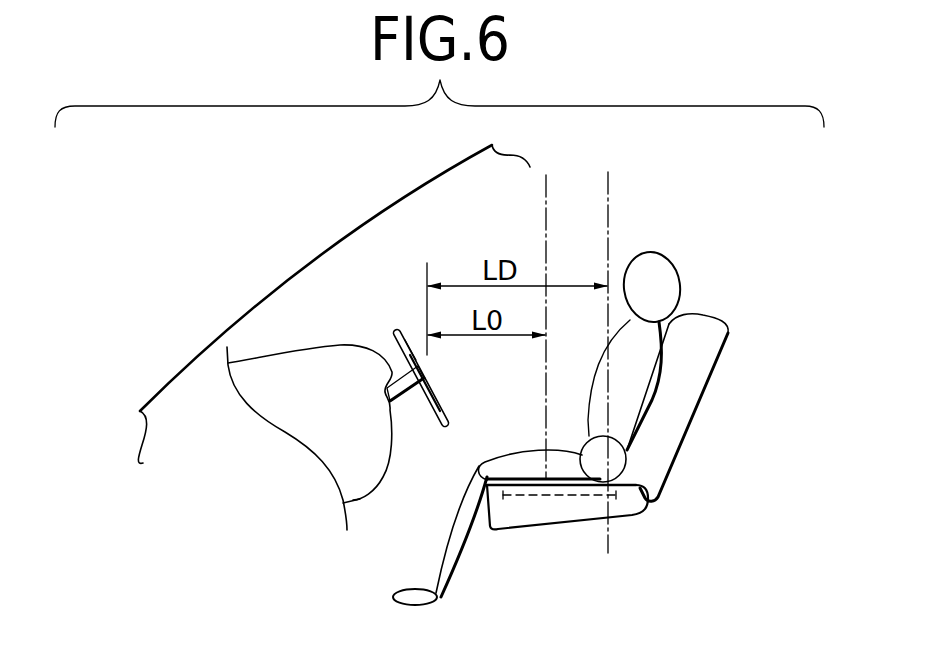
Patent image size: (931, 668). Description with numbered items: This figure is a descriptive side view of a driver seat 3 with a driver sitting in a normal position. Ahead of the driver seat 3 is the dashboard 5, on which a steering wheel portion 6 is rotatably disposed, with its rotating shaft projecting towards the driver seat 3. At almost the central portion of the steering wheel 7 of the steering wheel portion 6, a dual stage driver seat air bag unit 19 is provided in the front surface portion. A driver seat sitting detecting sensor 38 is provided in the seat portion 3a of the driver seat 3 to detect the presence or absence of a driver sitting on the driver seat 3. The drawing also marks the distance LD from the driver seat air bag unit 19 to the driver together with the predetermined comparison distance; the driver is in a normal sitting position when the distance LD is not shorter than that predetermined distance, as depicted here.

The driver seat 3 is at (625, 424).
The seat portion 3a is at (523, 523).
The dashboard 5 is at (389, 494).
The steering wheel portion 6 is at (391, 328).
The steering wheel 7 is at (445, 425).
The dual stage driver seat air bag unit 19 is at (418, 346).
The driver seat sitting detecting sensor 38 is at (565, 499).